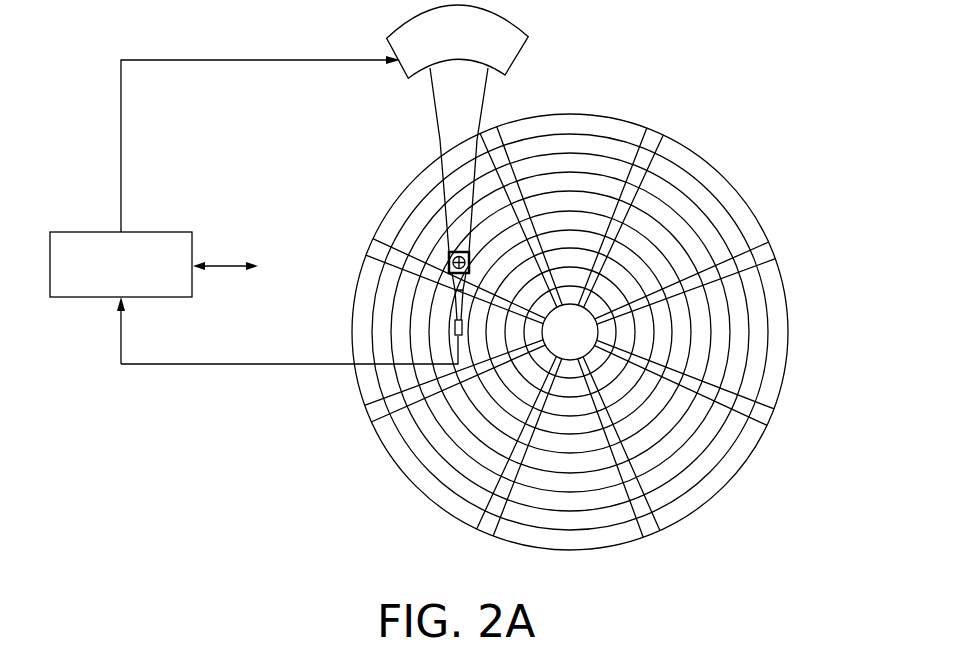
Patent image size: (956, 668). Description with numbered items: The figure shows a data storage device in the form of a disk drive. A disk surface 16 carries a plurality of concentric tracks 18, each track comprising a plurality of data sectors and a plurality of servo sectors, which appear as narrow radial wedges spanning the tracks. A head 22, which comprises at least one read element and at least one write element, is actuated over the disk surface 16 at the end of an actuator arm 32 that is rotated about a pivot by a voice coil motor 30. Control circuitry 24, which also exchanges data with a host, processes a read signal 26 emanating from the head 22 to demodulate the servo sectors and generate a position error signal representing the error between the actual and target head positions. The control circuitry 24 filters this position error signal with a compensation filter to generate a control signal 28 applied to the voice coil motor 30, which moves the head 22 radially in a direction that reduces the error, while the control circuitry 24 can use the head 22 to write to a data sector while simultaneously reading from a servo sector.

The disk surface 16 is at (724, 160).
The tracks 18 is at (568, 145).
The head 22 is at (445, 340).
The control circuitry 24 is at (160, 232).
The read signal 26 is at (246, 365).
The control signal 28 is at (121, 130).
The voice coil motor (VCM) 30 is at (403, 70).
The actuator arm 32 is at (437, 130).